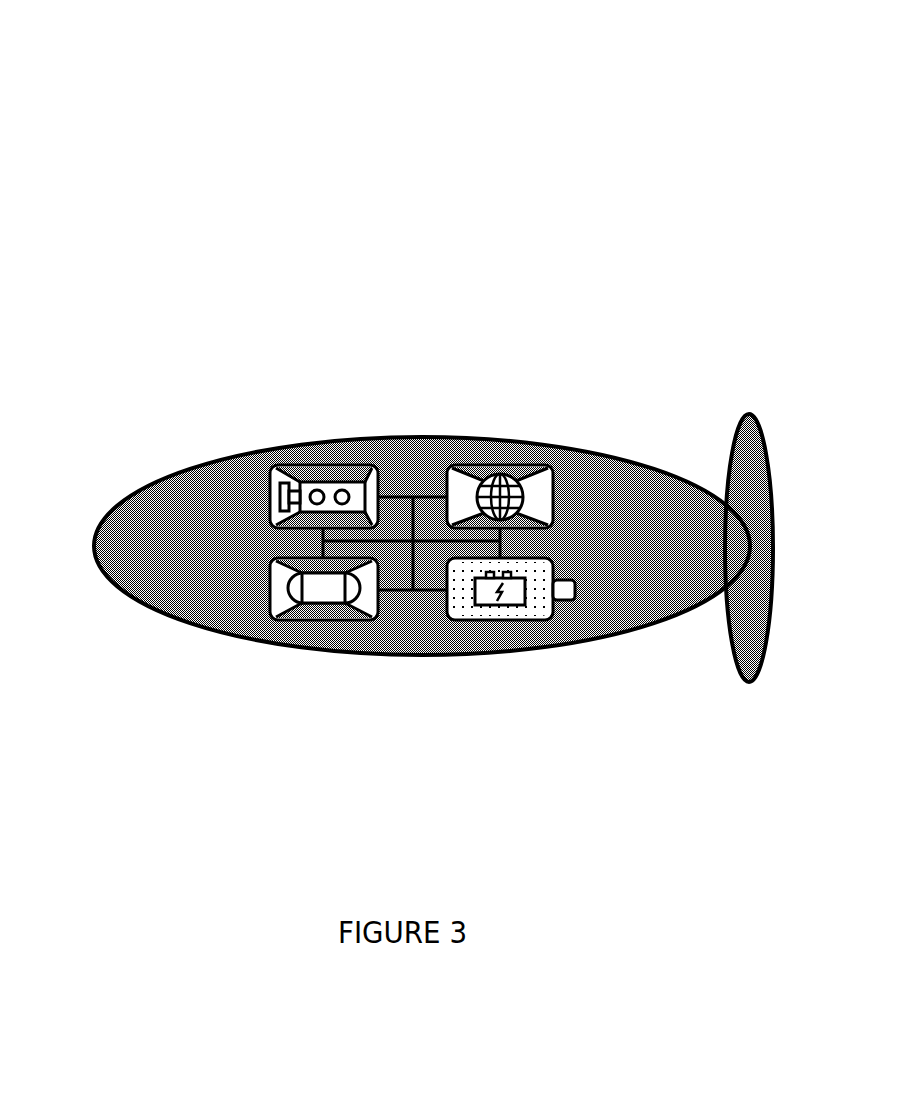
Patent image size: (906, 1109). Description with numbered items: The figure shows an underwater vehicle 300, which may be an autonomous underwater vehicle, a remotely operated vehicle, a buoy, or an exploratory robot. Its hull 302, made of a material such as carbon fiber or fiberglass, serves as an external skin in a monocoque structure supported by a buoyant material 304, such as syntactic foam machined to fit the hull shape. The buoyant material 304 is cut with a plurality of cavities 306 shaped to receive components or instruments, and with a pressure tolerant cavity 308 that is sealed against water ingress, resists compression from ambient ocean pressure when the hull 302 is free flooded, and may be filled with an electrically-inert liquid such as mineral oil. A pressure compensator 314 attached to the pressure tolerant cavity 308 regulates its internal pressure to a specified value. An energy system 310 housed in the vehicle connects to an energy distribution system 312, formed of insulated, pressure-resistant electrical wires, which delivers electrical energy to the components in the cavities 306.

The underwater vehicle 300 is at (157, 36).
The hull 302 is at (600, 401).
The buoyant material 304 is at (161, 589).
The cavities 306 is at (485, 436).
The pressure tolerant cavity 308 is at (316, 502).
The energy system 310 is at (516, 613).
The energy distribution system 312 is at (402, 610).
The pressure compensator 314 is at (583, 613).